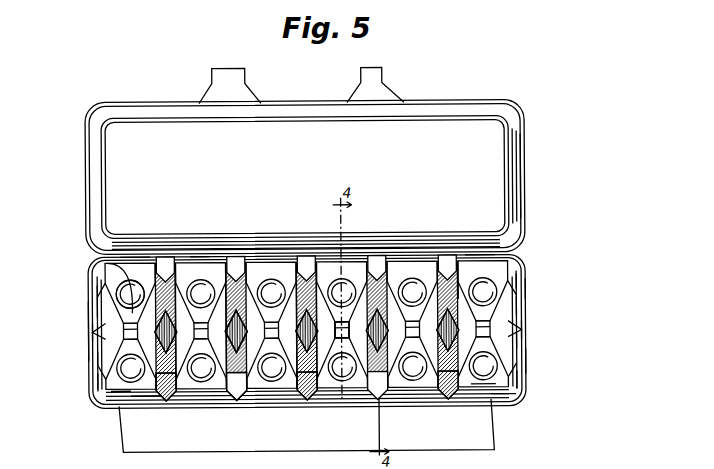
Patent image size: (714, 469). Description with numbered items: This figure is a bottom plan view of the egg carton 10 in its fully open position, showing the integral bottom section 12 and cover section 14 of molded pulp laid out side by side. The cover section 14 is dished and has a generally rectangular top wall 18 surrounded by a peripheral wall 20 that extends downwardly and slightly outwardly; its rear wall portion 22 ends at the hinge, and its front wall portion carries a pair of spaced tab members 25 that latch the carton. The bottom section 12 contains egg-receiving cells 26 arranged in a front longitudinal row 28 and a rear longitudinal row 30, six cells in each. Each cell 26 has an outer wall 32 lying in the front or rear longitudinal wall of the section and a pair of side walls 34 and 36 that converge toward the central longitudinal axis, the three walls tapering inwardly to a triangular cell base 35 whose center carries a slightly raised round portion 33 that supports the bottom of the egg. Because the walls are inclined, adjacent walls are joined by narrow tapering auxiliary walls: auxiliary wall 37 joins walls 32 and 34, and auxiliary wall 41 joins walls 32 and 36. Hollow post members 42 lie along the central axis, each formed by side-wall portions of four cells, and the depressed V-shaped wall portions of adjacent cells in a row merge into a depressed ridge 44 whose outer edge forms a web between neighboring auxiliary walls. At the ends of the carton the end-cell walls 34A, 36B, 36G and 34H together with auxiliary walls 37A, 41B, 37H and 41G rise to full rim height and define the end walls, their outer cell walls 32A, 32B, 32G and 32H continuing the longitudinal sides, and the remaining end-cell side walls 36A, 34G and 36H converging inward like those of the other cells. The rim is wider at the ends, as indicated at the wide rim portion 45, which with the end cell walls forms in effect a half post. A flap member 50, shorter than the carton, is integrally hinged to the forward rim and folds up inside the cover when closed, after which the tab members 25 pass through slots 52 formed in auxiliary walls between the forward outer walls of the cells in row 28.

The egg carton 10 is at (530, 241).
The bottom section 12 is at (82, 346).
The cover section 14 is at (82, 200).
The top wall 18 is at (252, 179).
The peripheral wall 20 is at (95, 163).
The rear wall portion 22 is at (305, 108).
The tab members 25 is at (228, 72).
The egg-receiving cells 26 is at (183, 265).
The front longitudinal row 28 is at (535, 366).
The rear longitudinal row 30 is at (541, 292).
The outer cell wall 32 is at (200, 262).
The outer cell wall of end cell 32A is at (142, 396).
The outer cell wall of end cell 32B is at (133, 262).
The outer cell wall of end cell 32G is at (500, 400).
The outer cell wall of end cell 32H is at (476, 262).
The round portion 33 is at (115, 270).
The side cell wall 34 is at (333, 324).
The side cell wall of end cell 34A is at (104, 363).
The side cell wall of end cell 34G is at (470, 386).
The side cell wall of end cell 34H is at (512, 306).
The cell base 35 is at (126, 292).
The side cell wall 36 is at (245, 313).
The side cell wall of end cell 36A is at (122, 392).
The side cell wall of end cell 36B is at (102, 308).
The side cell wall of end cell 36G is at (515, 340).
The side cell wall of end cell 36H is at (458, 300).
The auxiliary wall 37 is at (296, 262).
The auxiliary wall of end cell 37A is at (100, 383).
The auxiliary wall of end cell 37H is at (517, 279).
The auxiliary wall 41 is at (315, 262).
The auxiliary wall of end cell 41B is at (104, 290).
The auxiliary wall of end cell 41G is at (517, 380).
The hollow post members 42 is at (338, 336).
The depressed ridge 44 is at (222, 262).
The wide rim portion 45 is at (92, 330).
The flap member 50 is at (316, 436).
The slots 52 is at (237, 400).